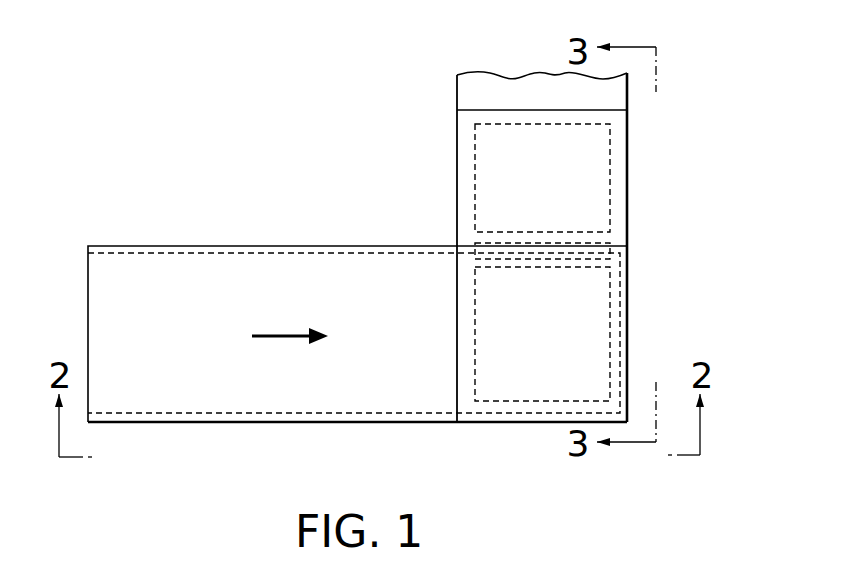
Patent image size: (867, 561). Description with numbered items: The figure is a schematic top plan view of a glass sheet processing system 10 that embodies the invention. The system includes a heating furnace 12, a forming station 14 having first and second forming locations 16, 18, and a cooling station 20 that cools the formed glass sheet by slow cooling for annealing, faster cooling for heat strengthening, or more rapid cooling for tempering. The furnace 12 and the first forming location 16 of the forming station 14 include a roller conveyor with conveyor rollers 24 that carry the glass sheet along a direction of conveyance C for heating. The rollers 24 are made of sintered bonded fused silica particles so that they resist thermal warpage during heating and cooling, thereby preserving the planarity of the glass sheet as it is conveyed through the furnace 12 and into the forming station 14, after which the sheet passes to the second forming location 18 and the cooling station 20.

The glass sheet processing system 10 is at (348, 127).
The heating furnace 12 is at (265, 428).
The forming station 14 is at (629, 245).
The first forming location 16 is at (629, 340).
The second forming location 18 is at (629, 175).
The cooling station 20 is at (629, 98).
The conveyor rollers 24 is at (375, 416).
The direction of conveyance C is at (297, 333).